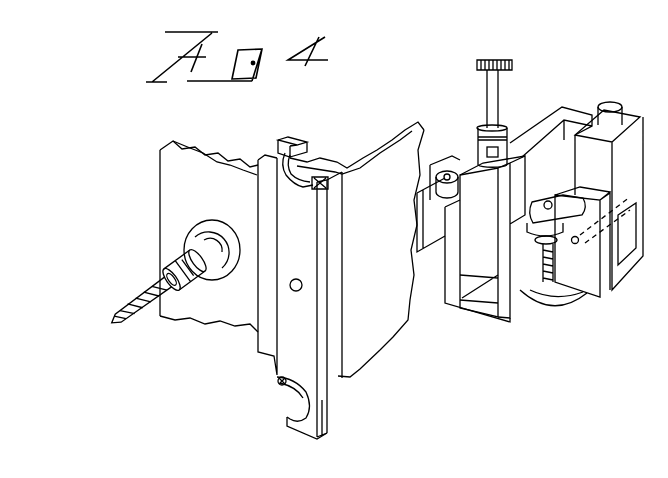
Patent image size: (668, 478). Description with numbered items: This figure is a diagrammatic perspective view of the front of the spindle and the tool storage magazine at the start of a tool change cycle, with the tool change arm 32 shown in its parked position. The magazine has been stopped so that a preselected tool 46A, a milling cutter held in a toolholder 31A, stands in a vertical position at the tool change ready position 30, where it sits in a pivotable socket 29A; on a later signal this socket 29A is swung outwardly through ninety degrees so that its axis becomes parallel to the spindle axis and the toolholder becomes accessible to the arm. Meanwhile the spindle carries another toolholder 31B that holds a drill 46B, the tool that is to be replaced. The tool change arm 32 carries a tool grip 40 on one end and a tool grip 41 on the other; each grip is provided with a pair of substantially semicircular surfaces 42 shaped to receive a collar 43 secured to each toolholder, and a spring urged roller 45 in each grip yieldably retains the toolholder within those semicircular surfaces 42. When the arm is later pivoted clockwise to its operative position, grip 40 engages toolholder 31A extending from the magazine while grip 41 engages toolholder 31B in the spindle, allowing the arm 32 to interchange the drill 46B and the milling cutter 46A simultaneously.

The socket 29A is at (485, 263).
The tool change ready position 30 is at (400, 397).
The toolholder 31A is at (482, 143).
The toolholder 31B is at (182, 253).
The tool change arm 32 is at (305, 379).
The tool grip 40 is at (316, 150).
The tool grip 41 is at (280, 408).
The semicircular surfaces 42 is at (297, 187).
The collar 43 is at (210, 265).
The spring urged roller 45 is at (330, 183).
The tool (milling cutter) 46A is at (495, 90).
The tool (drill) 46B is at (138, 318).